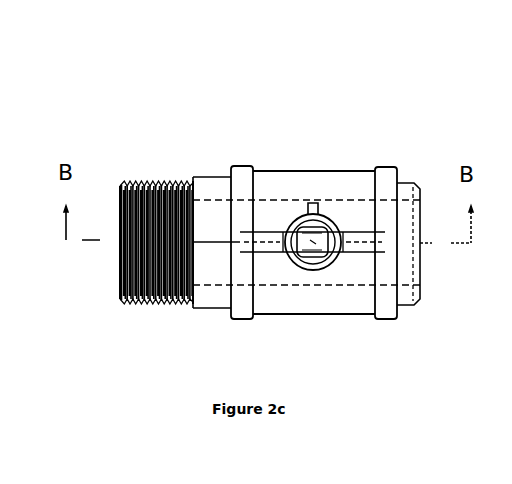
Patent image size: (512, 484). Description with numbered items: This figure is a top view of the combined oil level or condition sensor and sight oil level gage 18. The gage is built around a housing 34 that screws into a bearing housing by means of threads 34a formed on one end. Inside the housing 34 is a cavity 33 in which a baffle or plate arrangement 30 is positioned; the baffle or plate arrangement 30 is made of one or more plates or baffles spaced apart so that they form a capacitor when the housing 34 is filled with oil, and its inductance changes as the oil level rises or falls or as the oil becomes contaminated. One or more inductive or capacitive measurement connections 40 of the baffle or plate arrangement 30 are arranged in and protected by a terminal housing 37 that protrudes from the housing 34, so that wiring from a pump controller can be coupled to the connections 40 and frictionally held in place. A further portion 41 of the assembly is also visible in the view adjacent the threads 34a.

The oil level or condition sensor 18 is at (80, 102).
The baffle or plate arrangement 30 is at (355, 228).
The cavity 33 is at (290, 178).
The housing 34 is at (278, 318).
The threads 34a is at (148, 180).
The terminal housing 37 is at (324, 204).
The inductive or capacitive measurement connections 40 is at (335, 272).
The cylindrical section 41 is at (213, 177).